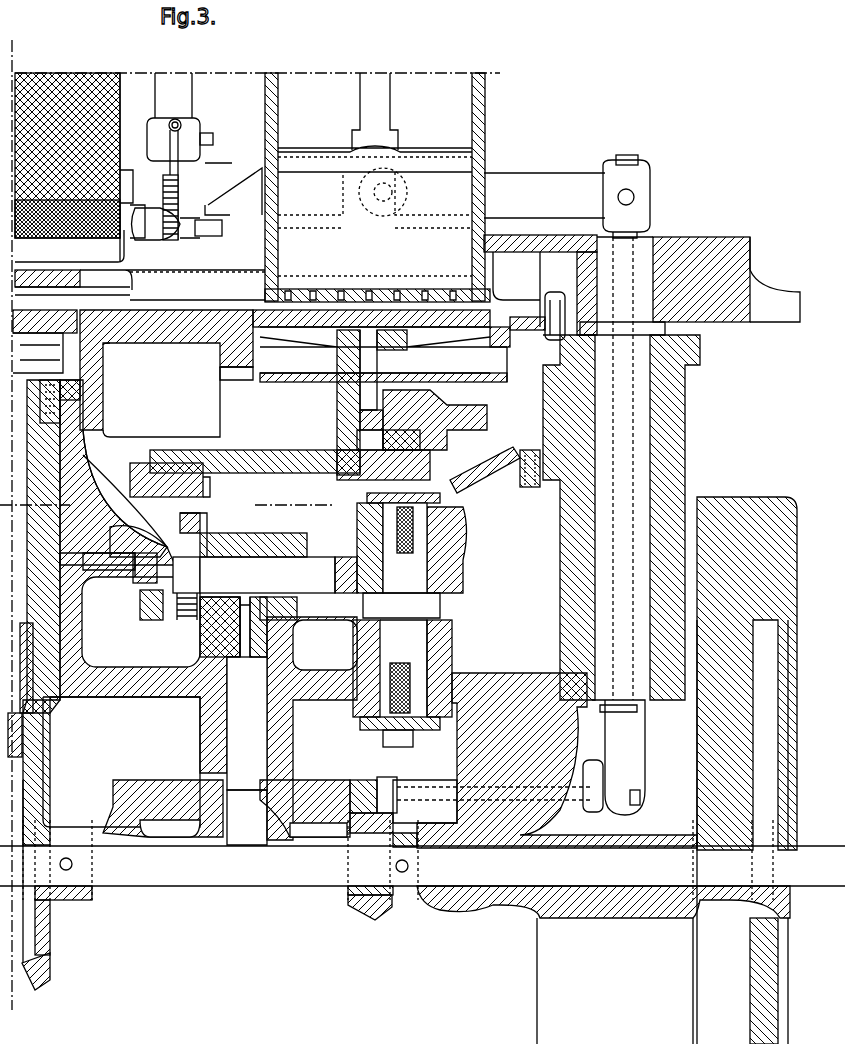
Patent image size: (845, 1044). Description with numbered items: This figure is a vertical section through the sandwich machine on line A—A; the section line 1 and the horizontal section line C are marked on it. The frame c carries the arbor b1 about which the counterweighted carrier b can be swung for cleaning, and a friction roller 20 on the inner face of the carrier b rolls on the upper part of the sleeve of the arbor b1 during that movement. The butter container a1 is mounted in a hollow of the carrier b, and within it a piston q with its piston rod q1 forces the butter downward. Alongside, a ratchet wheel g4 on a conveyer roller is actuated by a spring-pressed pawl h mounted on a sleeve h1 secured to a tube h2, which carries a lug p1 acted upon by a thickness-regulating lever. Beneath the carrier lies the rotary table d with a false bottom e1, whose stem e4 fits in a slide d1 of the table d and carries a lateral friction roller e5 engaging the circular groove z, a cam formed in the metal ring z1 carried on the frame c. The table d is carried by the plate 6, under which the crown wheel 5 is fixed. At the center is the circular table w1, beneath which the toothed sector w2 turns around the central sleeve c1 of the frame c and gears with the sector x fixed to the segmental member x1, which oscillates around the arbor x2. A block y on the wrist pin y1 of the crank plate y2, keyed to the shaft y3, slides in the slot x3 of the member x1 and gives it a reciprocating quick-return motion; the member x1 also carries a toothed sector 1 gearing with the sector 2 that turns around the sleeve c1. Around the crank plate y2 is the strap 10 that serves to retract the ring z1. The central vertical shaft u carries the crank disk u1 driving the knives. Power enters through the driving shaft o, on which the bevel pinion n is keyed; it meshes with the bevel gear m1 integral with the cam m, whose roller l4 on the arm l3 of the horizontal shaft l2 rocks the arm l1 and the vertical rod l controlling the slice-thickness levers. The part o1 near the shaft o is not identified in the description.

The toothed sector 1 is at (126, 600).
The section line C— C is at (167, 491).
The carrier b is at (697, 245).
The tube h2 is at (173, 95).
The sleeve h1 is at (147, 146).
The spring-pressed pawl h is at (216, 185).
The ratchet wheel g4 is at (178, 200).
The lug p1 is at (222, 228).
The container a1 is at (478, 124).
The piston rod q1 is at (375, 111).
The piston q is at (428, 160).
The friction roller 20 is at (545, 302).
The arbor b1 is at (621, 517).
The frame c is at (500, 680).
The driving shaft o is at (422, 860).
The foot o1 is at (42, 958).
The bevel pinion n is at (362, 912).
The circular table w1 is at (150, 335).
The crank disk u1 is at (48, 365).
The vertical shaft u is at (42, 568).
The central sleeve c1 is at (132, 690).
The bevel gear wheel m1 is at (113, 812).
The shaft y3 is at (292, 731).
The crank plate y2 is at (185, 620).
The block y is at (205, 580).
The wrist pin y1 is at (186, 575).
The toothed sector 2 is at (135, 590).
The strap 10 is at (145, 612).
The slot x3 is at (267, 575).
The toothed sector w2 is at (205, 522).
The sector x is at (272, 510).
The plate 6 is at (248, 458).
The crown wheel 5 is at (135, 484).
The stem e4 is at (360, 360).
The false bottom e1 is at (460, 345).
The rotary table d is at (517, 349).
The metal ring z1 is at (435, 414).
The circular groove z is at (493, 459).
The friction roller e5 is at (420, 456).
The slide d1 is at (363, 480).
The segmental member x1 is at (360, 525).
The arbor x2 is at (402, 625).
The vertical rod l is at (622, 770).
The arm l1 is at (588, 760).
The horizontal shaft l2 is at (491, 801).
The arm l3 is at (380, 782).
The roller l4 is at (352, 790).
The cam m is at (285, 796).